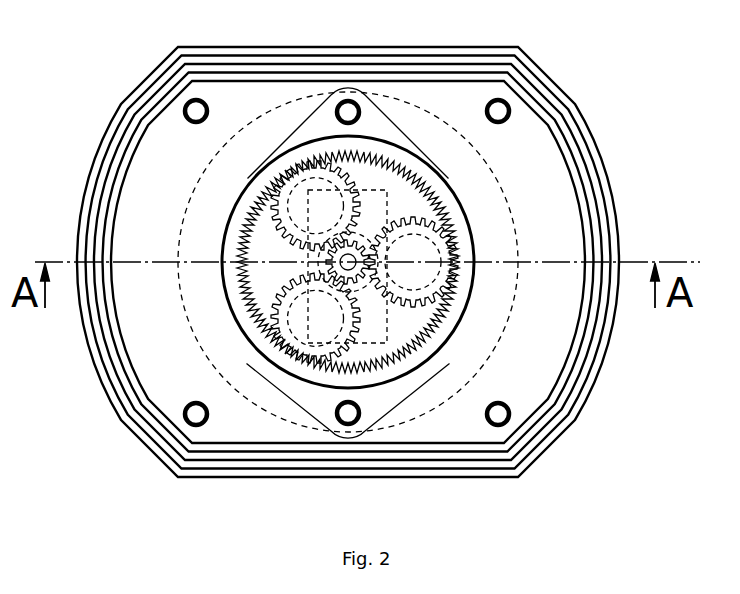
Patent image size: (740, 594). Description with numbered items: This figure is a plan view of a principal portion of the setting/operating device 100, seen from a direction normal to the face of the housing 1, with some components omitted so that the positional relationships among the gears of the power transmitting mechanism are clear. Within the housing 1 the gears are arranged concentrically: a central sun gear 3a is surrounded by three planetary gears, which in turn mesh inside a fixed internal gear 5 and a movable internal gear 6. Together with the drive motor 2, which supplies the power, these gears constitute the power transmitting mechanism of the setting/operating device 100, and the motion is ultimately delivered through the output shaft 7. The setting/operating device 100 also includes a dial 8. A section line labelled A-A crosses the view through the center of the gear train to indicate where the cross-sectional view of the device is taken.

The setting/operating device 100 is at (654, 30).
The housing 1 is at (168, 53).
The drive motor 2 is at (388, 141).
The sun gear 3a is at (354, 272).
The fixed internal gear 5 is at (418, 174).
The movable internal gear 6 is at (421, 157).
The output shaft 7 is at (377, 340).
The dial 8 is at (303, 262).